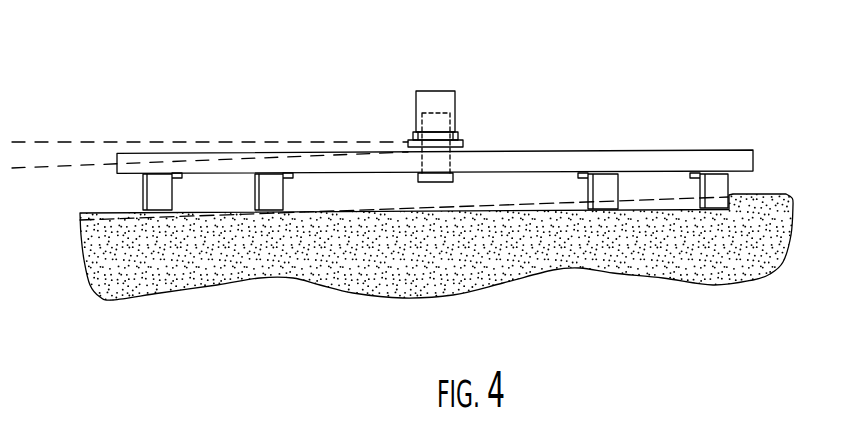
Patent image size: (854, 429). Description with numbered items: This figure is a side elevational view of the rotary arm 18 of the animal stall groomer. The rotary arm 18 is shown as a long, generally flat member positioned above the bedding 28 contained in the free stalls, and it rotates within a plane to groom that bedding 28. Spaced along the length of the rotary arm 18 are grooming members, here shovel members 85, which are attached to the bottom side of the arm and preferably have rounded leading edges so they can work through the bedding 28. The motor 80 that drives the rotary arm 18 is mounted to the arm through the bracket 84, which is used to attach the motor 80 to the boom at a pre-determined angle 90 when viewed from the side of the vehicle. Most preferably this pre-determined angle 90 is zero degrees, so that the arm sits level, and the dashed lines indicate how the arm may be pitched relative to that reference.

The rotary arm 18 is at (543, 157).
The bedding 28 is at (660, 250).
The motor 80 is at (436, 112).
The bracket 84 is at (465, 142).
The shovel member 85 is at (712, 185).
The pre-determined angle 90 is at (43, 212).